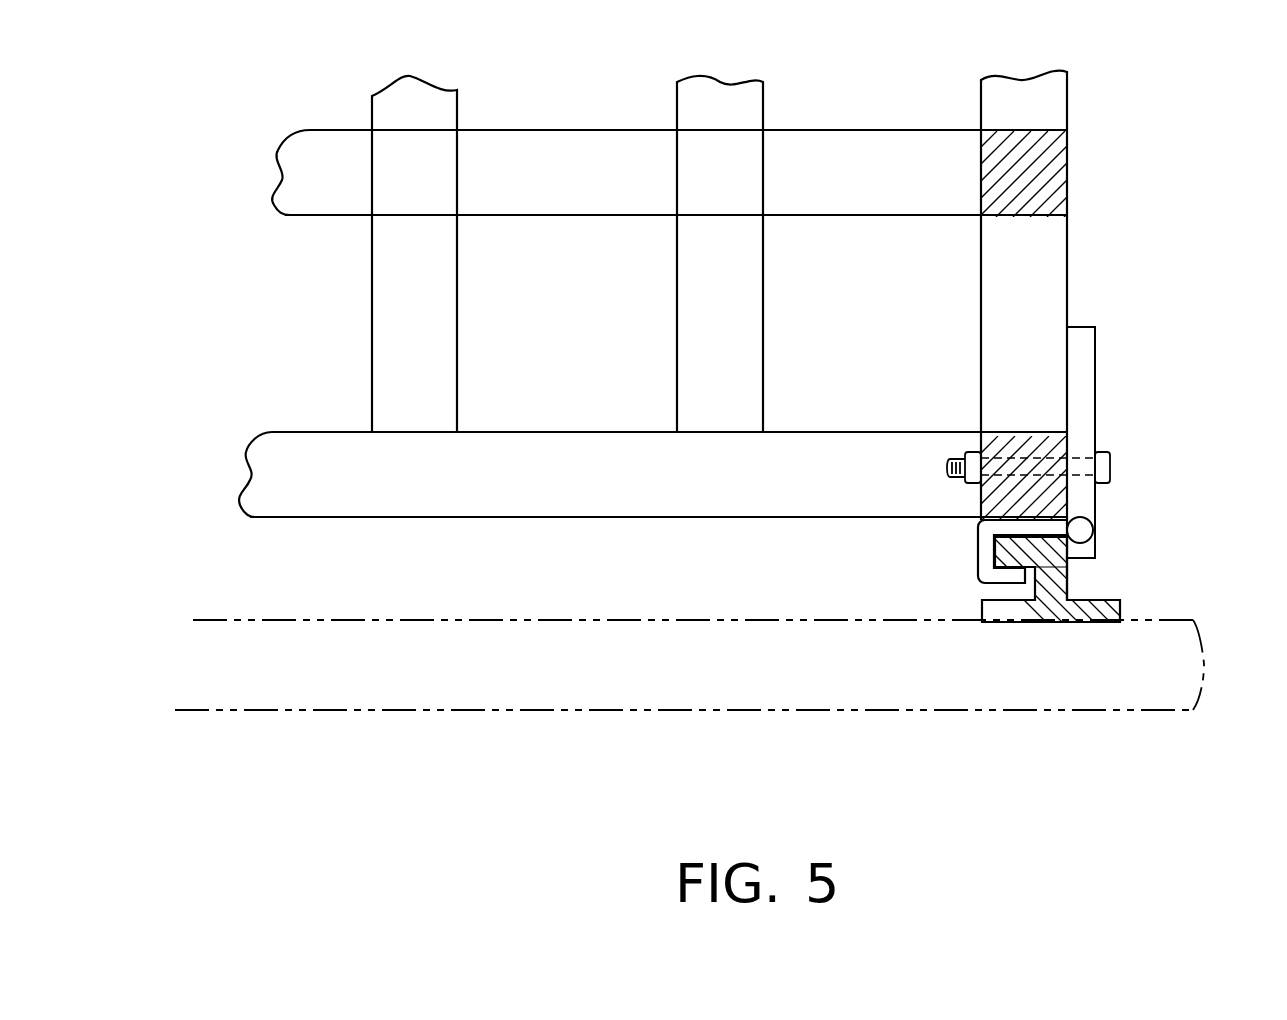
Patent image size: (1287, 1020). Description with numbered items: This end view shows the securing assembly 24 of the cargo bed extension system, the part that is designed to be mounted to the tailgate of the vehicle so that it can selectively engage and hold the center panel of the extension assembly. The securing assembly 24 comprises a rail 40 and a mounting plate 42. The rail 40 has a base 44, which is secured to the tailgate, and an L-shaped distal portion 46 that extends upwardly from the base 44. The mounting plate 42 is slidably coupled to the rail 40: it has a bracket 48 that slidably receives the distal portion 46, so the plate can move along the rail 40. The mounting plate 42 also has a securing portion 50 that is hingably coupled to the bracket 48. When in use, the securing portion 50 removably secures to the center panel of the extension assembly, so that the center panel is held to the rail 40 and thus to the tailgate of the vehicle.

The securing assembly 24 is at (1113, 511).
The rail 40 is at (1068, 563).
The mounting plate 42 is at (1083, 362).
The base 44 is at (1050, 596).
The L-shaped distal portion 46 is at (1012, 553).
The bracket 48 is at (978, 548).
The securing portion 50 is at (1082, 334).